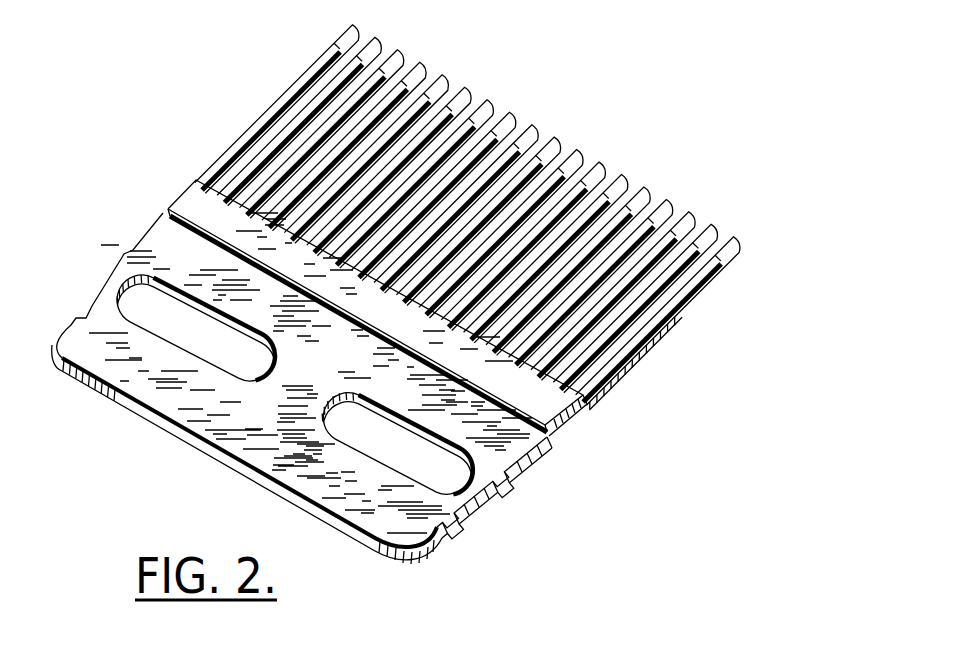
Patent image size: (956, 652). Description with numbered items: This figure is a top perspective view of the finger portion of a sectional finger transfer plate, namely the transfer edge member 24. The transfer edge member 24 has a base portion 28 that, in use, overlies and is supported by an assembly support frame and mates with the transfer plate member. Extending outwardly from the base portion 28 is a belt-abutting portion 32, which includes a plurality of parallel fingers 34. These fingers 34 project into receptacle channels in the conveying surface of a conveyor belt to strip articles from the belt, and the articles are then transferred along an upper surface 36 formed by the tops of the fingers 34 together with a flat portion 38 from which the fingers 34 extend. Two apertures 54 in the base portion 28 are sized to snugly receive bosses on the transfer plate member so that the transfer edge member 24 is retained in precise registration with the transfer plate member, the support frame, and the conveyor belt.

The transfer edge member 24 is at (558, 429).
The base portion 28 is at (475, 512).
The belt-abutting portion 32 is at (459, 217).
The fingers 34 is at (698, 302).
The upper surface 36 is at (164, 212).
The flat portion 38 is at (548, 447).
The apertures 54 is at (164, 326).